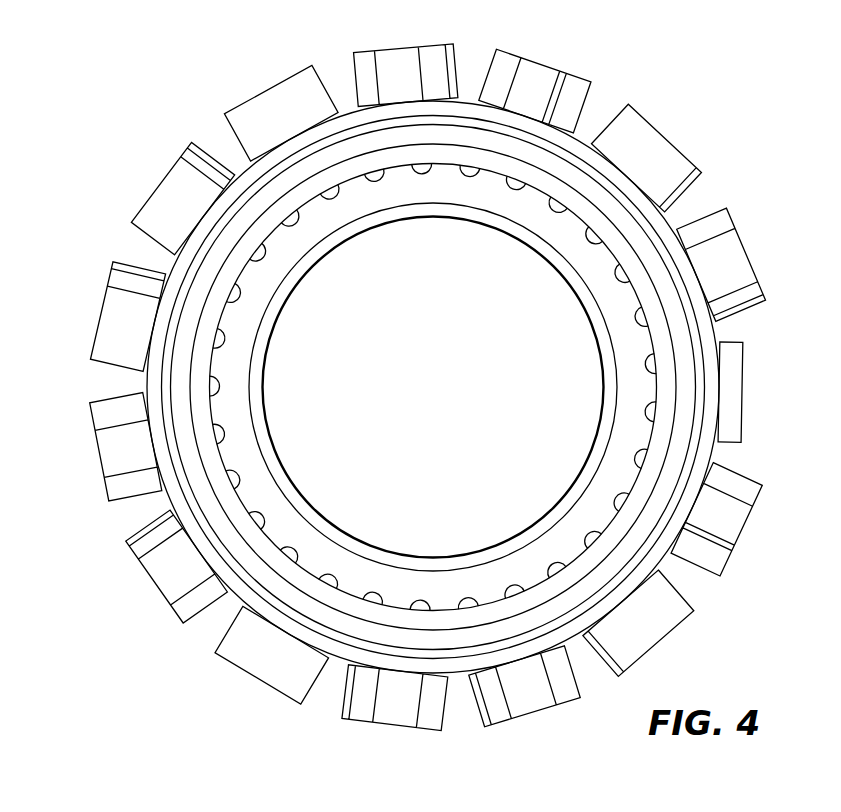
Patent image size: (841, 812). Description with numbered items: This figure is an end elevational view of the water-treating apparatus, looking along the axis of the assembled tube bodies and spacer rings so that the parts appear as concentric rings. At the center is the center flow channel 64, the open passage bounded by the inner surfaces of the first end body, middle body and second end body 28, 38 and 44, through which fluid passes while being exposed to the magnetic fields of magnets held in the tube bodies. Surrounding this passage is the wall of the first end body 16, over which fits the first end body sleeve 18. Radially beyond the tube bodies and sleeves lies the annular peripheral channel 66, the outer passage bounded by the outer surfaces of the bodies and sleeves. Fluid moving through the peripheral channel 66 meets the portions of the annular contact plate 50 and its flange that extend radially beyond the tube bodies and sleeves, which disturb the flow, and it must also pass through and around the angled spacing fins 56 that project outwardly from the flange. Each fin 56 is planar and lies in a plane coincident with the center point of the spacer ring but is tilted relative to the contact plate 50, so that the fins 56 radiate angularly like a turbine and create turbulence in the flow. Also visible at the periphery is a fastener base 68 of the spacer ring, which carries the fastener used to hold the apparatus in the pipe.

The first end body 16 is at (637, 253).
The first end body sleeve 18 is at (693, 342).
The inner surface of the middle body 28 is at (313, 508).
The inner surface of the first end body 38 is at (433, 387).
The inner surface of the second end body 44 is at (432, 386).
The annular contact plate 50 is at (697, 460).
The spacing fins 56 is at (586, 76).
The center flow channel 64 is at (303, 417).
The annular peripheral channel 66 is at (217, 138).
The fastener base 68 is at (742, 367).